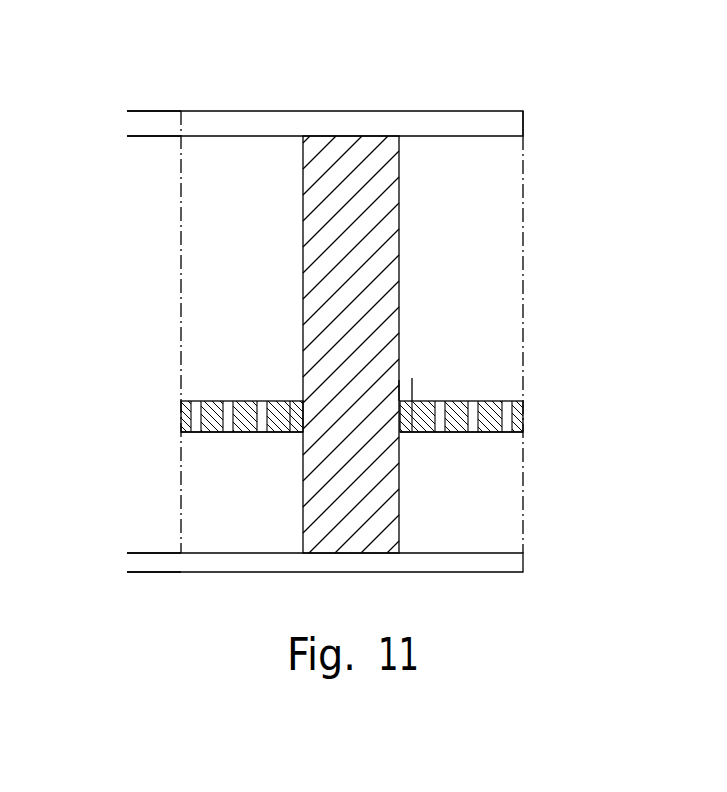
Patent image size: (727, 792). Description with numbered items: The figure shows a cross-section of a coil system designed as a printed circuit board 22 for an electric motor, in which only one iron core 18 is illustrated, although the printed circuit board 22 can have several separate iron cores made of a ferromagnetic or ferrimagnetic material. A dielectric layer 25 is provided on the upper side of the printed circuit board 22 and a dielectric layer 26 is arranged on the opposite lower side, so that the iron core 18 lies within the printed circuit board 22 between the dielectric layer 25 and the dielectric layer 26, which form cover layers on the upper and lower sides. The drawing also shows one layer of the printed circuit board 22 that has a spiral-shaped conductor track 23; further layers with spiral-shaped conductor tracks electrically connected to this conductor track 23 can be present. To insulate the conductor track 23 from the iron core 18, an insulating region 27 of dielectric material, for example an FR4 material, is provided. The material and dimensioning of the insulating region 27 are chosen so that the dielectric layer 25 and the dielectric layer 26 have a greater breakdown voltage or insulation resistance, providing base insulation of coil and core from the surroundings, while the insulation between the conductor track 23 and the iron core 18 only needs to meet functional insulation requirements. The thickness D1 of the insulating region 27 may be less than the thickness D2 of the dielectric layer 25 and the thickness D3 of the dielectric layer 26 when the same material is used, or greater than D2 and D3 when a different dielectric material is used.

The printed circuit board 22 is at (523, 105).
The dielectric layer 25 is at (512, 124).
The dielectric layer 26 is at (510, 563).
The iron core 18 is at (377, 240).
The spiral-shaped conductor track 23 is at (300, 401).
The insulating region 27 is at (300, 432).
The thickness of insulating region D1 is at (380, 388).
The thickness of dielectric layer D2 is at (164, 88).
The thickness of dielectric layer D3 is at (164, 528).